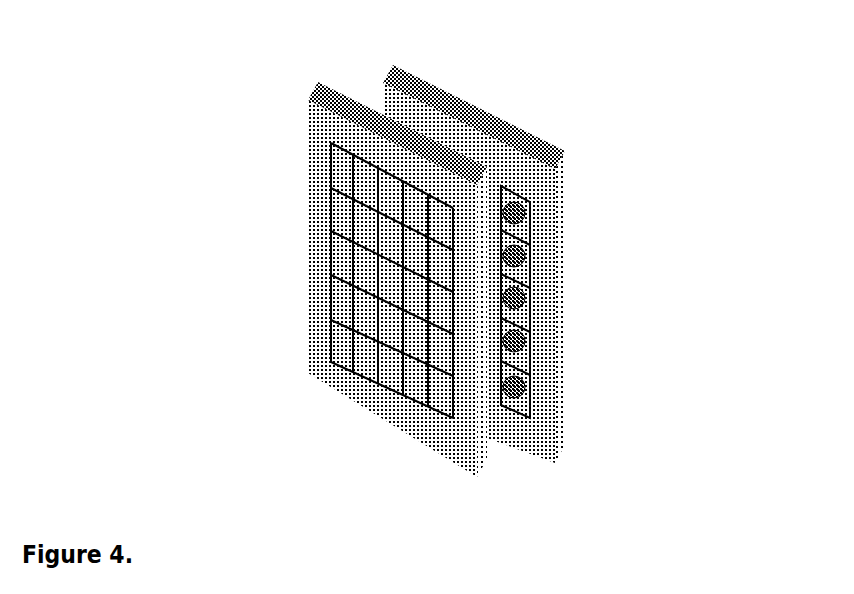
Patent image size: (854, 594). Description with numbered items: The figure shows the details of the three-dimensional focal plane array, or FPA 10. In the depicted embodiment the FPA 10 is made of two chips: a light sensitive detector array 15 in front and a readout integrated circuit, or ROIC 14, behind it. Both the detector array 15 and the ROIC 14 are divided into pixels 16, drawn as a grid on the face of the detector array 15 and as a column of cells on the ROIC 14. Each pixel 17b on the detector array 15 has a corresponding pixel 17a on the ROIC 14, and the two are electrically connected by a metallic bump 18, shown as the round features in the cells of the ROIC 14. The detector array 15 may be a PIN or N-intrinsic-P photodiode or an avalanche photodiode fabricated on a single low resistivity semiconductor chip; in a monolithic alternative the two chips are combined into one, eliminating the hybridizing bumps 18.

The focal plane array 10 is at (503, 251).
The ROIC 14 is at (522, 112).
The light sensitive detector array 15 is at (318, 145).
The pixels 16 is at (385, 260).
The pixel on the ROIC 17a is at (533, 250).
The pixel on the detector array 17b is at (443, 261).
The metallic bump 18 is at (517, 347).